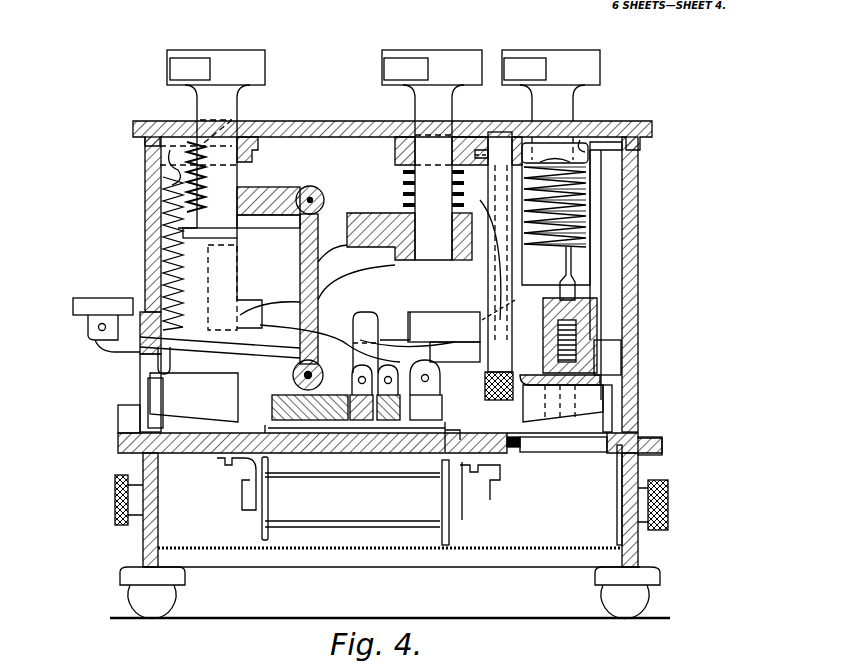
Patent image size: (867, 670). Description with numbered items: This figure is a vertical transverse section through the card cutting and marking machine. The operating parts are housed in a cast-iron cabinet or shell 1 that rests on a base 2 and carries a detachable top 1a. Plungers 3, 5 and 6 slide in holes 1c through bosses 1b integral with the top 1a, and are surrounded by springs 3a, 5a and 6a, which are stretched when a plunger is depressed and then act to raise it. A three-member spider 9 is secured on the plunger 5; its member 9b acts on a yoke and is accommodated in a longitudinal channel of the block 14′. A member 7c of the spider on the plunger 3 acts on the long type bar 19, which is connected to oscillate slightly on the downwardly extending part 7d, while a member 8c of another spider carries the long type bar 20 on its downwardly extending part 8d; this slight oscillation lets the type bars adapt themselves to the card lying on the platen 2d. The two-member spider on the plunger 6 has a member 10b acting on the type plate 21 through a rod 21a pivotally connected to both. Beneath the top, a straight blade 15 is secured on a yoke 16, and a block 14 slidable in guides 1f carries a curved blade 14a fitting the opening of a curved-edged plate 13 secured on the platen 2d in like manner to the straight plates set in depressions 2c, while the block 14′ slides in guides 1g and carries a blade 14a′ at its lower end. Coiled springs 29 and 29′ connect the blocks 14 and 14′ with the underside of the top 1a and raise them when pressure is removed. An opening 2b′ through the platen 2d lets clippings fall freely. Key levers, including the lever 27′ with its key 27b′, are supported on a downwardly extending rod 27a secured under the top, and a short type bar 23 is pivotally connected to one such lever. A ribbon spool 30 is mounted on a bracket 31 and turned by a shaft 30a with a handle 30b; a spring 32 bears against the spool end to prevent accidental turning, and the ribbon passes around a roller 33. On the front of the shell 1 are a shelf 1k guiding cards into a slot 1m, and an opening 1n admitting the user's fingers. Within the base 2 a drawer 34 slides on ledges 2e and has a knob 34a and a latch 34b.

The cabinet 1 is at (640, 205).
The detachable top 1a is at (300, 128).
The boss 1b is at (258, 158).
The hole 1c is at (398, 158).
The guides 1f is at (612, 392).
The guides 1g is at (218, 262).
The longitudinal shelf 1k is at (128, 428).
The longitudinal slot 1m is at (172, 422).
The longitudinal opening 1n is at (150, 370).
The base 2 is at (148, 535).
The opening 2b′ is at (577, 455).
The depressions 2c is at (597, 455).
The platen 2d is at (380, 462).
The ledges 2e is at (440, 558).
The plunger 3 is at (572, 62).
The spring 3a is at (550, 215).
The plunger 5 is at (447, 62).
The spring 5a is at (403, 192).
The plunger 6 is at (230, 57).
The spring 6a is at (250, 312).
The spider member 7c is at (433, 318).
The downwardly extending part 7d is at (366, 320).
The spider member 8c is at (395, 320).
The downwardly extending part 8d is at (446, 339).
The three-member spider 9 is at (372, 246).
The spider member 9b is at (255, 308).
The spider member 10b is at (283, 194).
The plate 13 is at (520, 450).
The block 14 is at (614, 345).
The block 14′ is at (236, 282).
The curved blade 14a is at (530, 410).
The blade 14a′ is at (297, 378).
The straight blade 15 is at (610, 360).
The yoke 16 is at (612, 262).
The long type bar 19 is at (352, 388).
The long type bar 20 is at (412, 375).
The type plate 21 is at (292, 408).
The rod 21a is at (298, 350).
The short type bar 23 is at (410, 392).
The lever 27′ is at (305, 345).
The downwardly extending rod 27a is at (505, 258).
The key 27b′ is at (108, 300).
The coiled spring 29 is at (580, 195).
The coiled spring 29′ is at (240, 120).
The spool 30 is at (355, 501).
The shaft 30a is at (214, 484).
The handle 30b is at (118, 505).
The bracket 31 is at (255, 482).
The spring 32 is at (268, 468).
The roller 33 is at (420, 438).
The drawer 34 is at (545, 548).
The knob 34a is at (668, 520).
The latch 34b is at (640, 463).